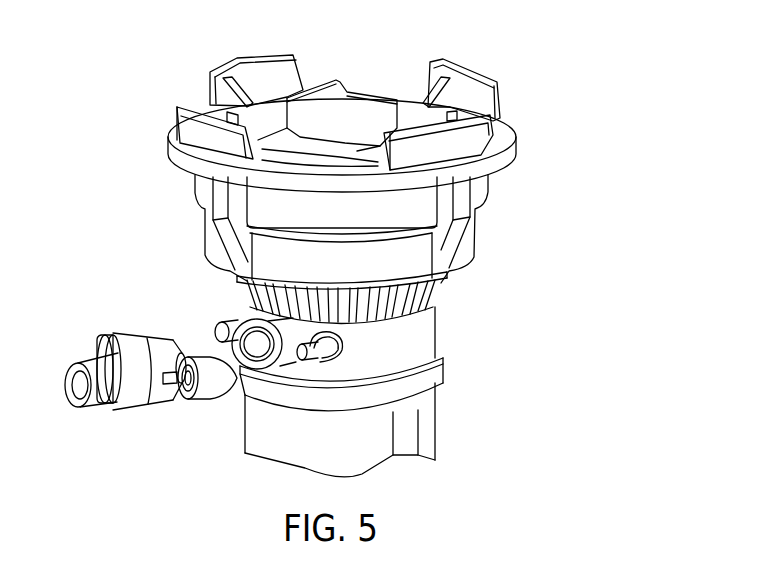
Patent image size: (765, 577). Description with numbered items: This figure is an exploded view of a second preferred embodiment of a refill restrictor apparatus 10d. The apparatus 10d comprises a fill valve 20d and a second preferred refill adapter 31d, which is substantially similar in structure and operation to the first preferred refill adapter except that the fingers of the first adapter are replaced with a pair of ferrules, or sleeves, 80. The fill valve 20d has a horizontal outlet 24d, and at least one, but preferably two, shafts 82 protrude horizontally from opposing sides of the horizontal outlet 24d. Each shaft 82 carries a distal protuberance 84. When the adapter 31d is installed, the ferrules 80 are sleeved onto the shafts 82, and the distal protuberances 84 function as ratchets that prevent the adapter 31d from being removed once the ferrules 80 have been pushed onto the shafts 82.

The refill restrictor apparatus 10d is at (105, 94).
The fill valve 20d is at (558, 166).
The refill adapter 31d is at (116, 278).
The ferrules 80 is at (112, 340).
The shafts 82 is at (231, 318).
The horizontal outlet 24d is at (285, 362).
The distal protuberance 84 is at (303, 363).